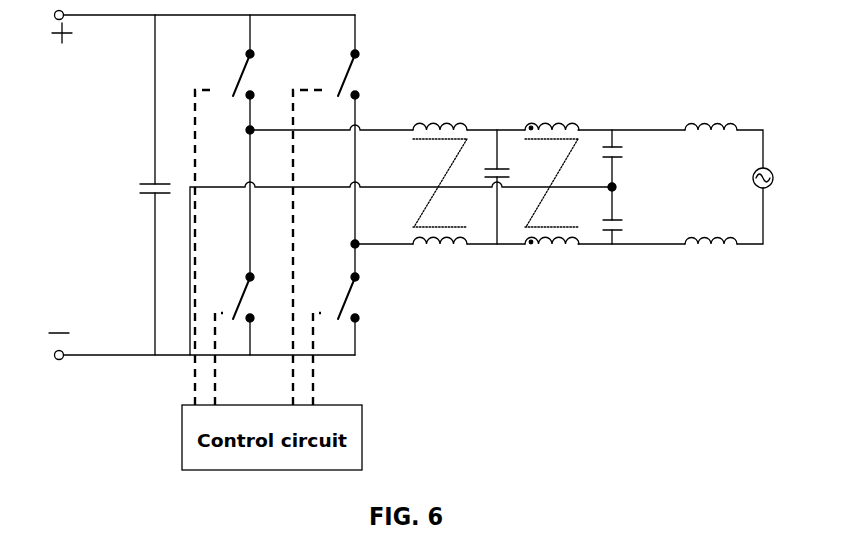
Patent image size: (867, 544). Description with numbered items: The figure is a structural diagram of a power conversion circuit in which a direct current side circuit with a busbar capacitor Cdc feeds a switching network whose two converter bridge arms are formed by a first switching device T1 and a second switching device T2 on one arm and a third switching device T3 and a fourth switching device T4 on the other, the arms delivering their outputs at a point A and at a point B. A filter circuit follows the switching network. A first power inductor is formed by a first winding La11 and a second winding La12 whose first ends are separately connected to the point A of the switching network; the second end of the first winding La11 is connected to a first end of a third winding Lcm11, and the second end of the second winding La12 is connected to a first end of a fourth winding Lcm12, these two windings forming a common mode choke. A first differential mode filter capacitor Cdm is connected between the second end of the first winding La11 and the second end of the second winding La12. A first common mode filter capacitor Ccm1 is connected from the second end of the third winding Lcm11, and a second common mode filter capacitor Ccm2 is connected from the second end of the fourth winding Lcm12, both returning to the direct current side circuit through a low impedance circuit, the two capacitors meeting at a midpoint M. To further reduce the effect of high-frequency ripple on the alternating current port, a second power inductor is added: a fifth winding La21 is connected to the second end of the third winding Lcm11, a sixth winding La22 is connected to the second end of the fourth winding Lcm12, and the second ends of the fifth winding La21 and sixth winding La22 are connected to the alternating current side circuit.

The first switching device T1 is at (230, 73).
The second switching device T2 is at (231, 295).
The third switching device T3 is at (335, 73).
The fourth switching device T4 is at (335, 295).
The point A of the switching network A is at (239, 135).
The node B is at (346, 235).
The DC link capacitor Cdc is at (131, 185).
The first winding La11 is at (440, 162).
The second winding La12 is at (440, 258).
The third winding Lcm11 is at (552, 162).
The fourth winding Lcm12 is at (554, 258).
The fifth winding La21 is at (710, 113).
The sixth winding La22 is at (712, 259).
The first differential mode filter capacitor Cdm is at (521, 187).
The first common mode filter capacitor Ccm1 is at (643, 158).
The second common mode filter capacitor Ccm2 is at (643, 215).
The midpoint M is at (599, 198).